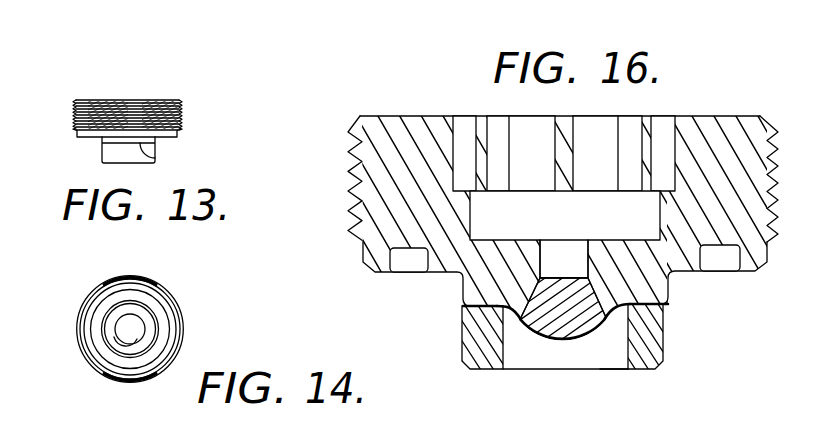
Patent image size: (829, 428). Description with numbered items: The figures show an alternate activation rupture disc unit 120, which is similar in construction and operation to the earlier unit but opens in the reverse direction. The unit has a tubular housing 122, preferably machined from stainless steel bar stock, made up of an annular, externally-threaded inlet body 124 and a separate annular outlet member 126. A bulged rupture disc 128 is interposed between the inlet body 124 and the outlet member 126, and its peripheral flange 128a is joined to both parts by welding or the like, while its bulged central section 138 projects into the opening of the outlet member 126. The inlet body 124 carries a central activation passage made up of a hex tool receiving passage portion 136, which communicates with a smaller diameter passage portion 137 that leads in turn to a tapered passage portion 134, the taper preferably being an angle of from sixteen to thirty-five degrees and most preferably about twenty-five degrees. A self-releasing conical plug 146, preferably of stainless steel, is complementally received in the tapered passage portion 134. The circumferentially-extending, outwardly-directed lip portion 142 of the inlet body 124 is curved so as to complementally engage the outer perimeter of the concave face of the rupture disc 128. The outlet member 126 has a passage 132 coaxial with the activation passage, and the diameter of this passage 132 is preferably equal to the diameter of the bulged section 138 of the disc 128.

In FIG. 13, the activation rupture disc unit 120 is at (196, 80).
In FIG. 14, the activation rupture disc unit 120 is at (203, 296).
In FIG. 16, the activation rupture disc unit 120 is at (748, 82).
In FIG. 13, the housing 122 is at (83, 93).
In FIG. 14, the housing 122 is at (92, 278).
In FIG. 16, the housing 122 is at (406, 108).
In FIG. 13, the inlet body 124 is at (138, 97).
In FIG. 14, the inlet body 124 is at (157, 283).
In FIG. 16, the inlet body 124 is at (380, 143).
In FIG. 13, the outlet member 126 is at (107, 152).
In FIG. 14, the outlet member 126 is at (112, 325).
In FIG. 16, the outlet member 126 is at (662, 352).
In FIG. 13, the rupture disc 128 is at (152, 152).
In FIG. 16, the rupture disc 128 is at (466, 308).
In FIG. 16, the peripheral flange 128a is at (485, 315).
In FIG. 14, the passage 132 is at (119, 338).
In FIG. 16, the passage 132 is at (619, 370).
In FIG. 16, the tapered passage portion 134 is at (590, 292).
In FIG. 16, the passage portion 136 is at (580, 139).
In FIG. 16, the passage portion 137 is at (550, 255).
In FIG. 14, the bulged central section 138 is at (137, 327).
In FIG. 16, the bulged central section 138 is at (536, 342).
In FIG. 16, the lip portion 142 is at (632, 322).
In FIG. 16, the self-releasing conical plug 146 is at (583, 323).